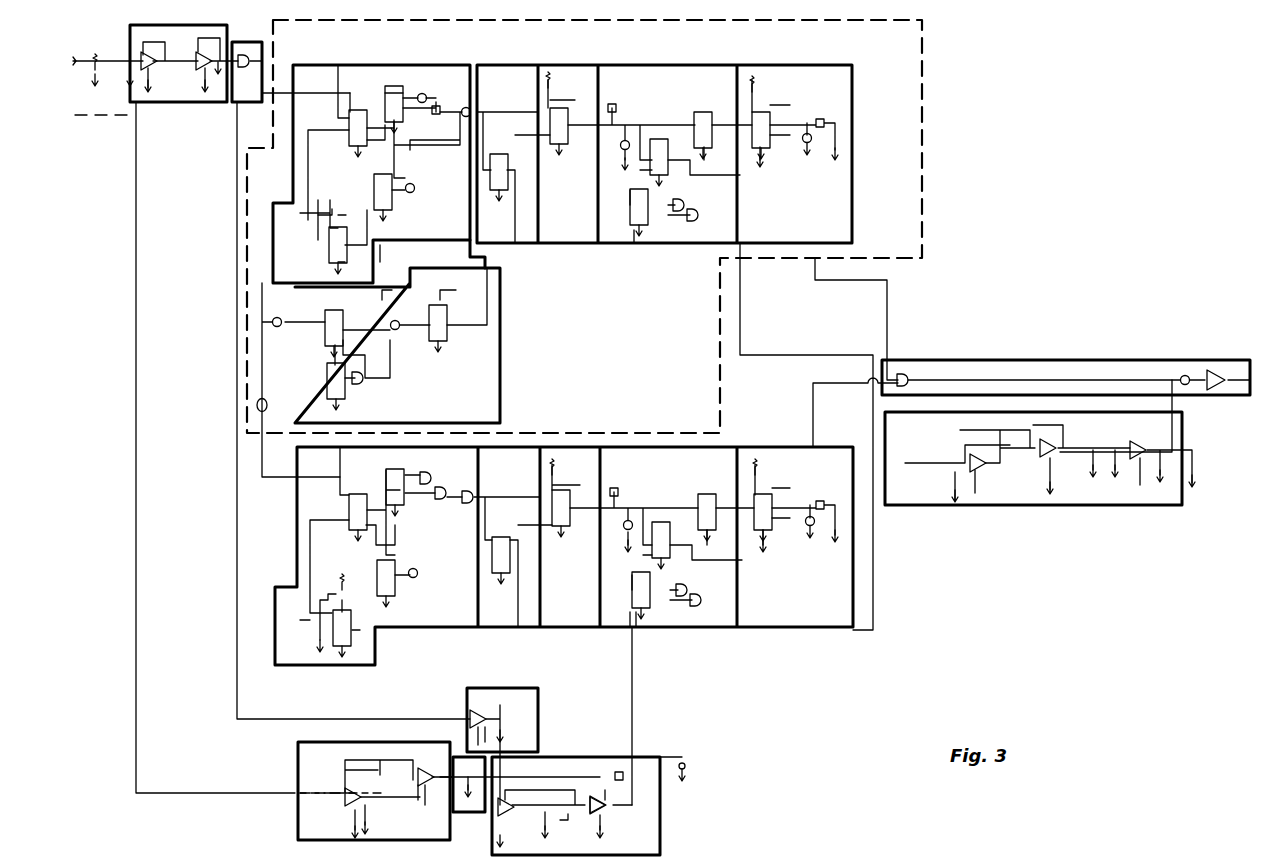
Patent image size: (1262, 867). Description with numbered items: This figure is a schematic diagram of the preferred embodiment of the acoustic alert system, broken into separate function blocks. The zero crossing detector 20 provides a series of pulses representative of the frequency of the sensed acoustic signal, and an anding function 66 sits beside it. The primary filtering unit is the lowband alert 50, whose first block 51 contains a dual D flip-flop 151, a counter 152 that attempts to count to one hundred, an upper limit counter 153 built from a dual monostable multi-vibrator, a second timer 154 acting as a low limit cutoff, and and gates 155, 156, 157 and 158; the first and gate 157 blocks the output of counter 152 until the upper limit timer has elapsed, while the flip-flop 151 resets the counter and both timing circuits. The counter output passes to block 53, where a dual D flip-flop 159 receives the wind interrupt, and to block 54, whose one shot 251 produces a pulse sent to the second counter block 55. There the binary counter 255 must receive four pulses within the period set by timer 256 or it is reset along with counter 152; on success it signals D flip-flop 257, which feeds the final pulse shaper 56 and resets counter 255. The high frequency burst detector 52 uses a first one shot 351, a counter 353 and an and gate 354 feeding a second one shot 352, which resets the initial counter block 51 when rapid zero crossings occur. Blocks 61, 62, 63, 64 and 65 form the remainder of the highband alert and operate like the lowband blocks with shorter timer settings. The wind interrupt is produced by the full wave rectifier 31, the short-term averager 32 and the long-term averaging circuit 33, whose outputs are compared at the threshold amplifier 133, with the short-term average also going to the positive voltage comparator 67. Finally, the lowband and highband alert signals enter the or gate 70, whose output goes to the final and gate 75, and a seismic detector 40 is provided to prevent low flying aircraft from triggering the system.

The zero crossing detector 20 is at (180, 94).
The anding function 66 is at (250, 94).
The lowband alert 50 is at (892, 107).
The initial counter block 51 is at (338, 155).
The dual D flip-flop 151 is at (345, 125).
The counter 152 is at (388, 100).
The upper limit counter 153 is at (340, 240).
The second timer 154 is at (378, 235).
The and gate 155 is at (421, 93).
The and gate 156 is at (438, 104).
The first and gate 157 is at (468, 107).
The and gate 158 is at (398, 190).
The dual D flip-flop 159 is at (505, 170).
The high frequency burst detector 52 is at (364, 345).
The first one shot 351 is at (325, 342).
The second one shot 352 is at (438, 330).
The counter 353 is at (340, 385).
The and gate 354 is at (390, 326).
The wind interrupt flip-flop block 53 is at (527, 204).
The one shot block 54 is at (581, 184).
The second counter block 55 is at (690, 161).
The final pulse shaper 56 is at (827, 76).
The one shot 251 is at (552, 132).
The second counter 255 is at (660, 165).
The timer 256 is at (642, 228).
The D flip-flop 257 is at (700, 120).
The highband alert block 61 is at (417, 615).
The highband alert block 62 is at (498, 612).
The highband alert block 63 is at (562, 608).
The highband alert block 64 is at (668, 612).
The highband alert block 65 is at (836, 574).
The or gate 70 is at (903, 372).
The second and gate 75 is at (1190, 372).
The seismic detector 40 is at (1019, 485).
The full wave rectifier 31 is at (314, 763).
The short-term averager 32 is at (470, 805).
The long-term averaging circuit 33 is at (598, 789).
The threshold amplifier 133 is at (595, 800).
The positive voltage comparator 67 is at (522, 702).